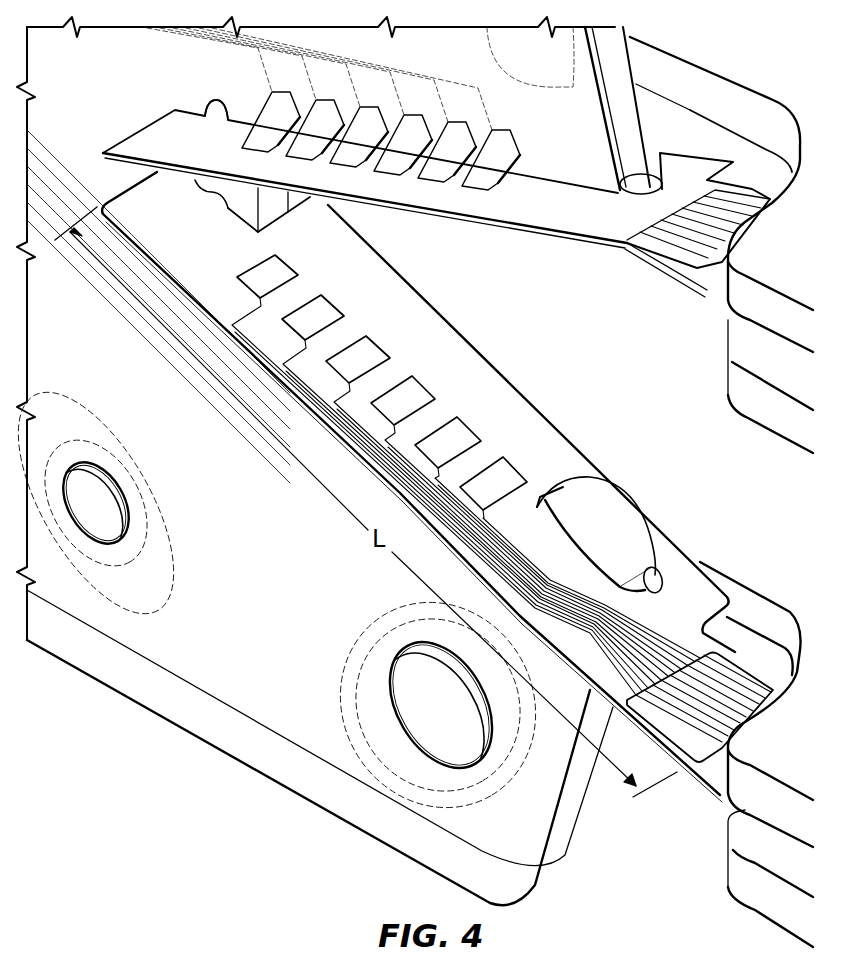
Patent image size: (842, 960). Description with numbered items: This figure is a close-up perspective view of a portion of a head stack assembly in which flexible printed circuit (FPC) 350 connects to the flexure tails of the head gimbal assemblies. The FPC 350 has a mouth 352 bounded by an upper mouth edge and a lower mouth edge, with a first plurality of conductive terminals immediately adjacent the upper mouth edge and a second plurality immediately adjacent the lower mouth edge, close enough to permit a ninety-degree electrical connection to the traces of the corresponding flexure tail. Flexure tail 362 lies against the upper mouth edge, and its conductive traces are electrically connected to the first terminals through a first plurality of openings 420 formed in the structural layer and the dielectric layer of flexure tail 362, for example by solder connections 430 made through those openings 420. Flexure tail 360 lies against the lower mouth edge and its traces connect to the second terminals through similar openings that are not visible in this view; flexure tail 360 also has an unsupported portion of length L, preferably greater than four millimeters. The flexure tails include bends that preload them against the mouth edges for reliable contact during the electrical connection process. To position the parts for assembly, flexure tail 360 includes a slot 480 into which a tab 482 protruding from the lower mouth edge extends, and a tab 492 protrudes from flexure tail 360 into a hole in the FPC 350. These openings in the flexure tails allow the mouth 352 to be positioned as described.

The FPC 350 is at (224, 744).
The mouth 352 is at (600, 329).
The flexure tail 360 is at (455, 346).
The flexure tail 362 is at (143, 148).
The openings 420 is at (247, 143).
The solder connections 430 is at (445, 190).
The slot 480 is at (660, 582).
The tab 482 is at (615, 498).
The tab 492 is at (224, 200).